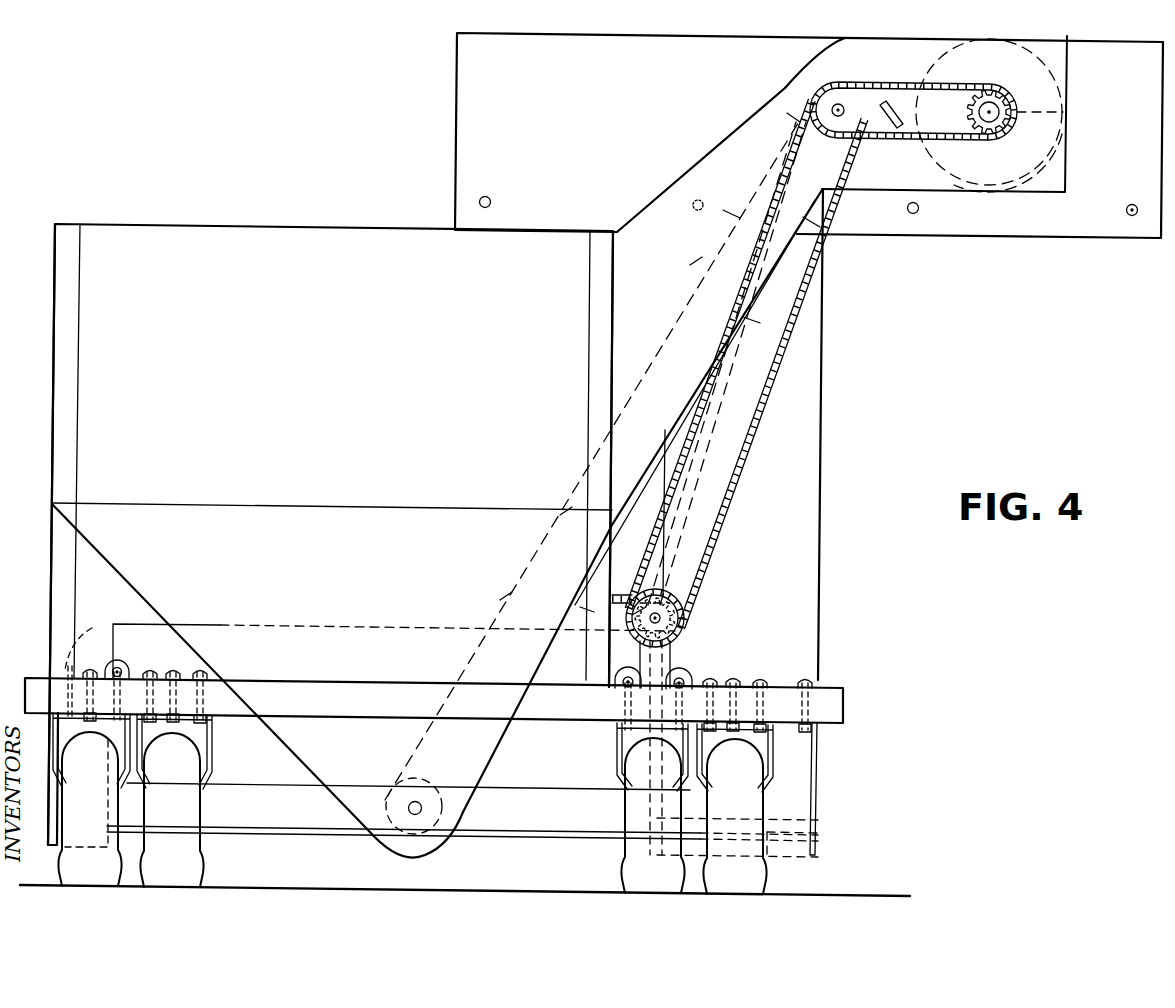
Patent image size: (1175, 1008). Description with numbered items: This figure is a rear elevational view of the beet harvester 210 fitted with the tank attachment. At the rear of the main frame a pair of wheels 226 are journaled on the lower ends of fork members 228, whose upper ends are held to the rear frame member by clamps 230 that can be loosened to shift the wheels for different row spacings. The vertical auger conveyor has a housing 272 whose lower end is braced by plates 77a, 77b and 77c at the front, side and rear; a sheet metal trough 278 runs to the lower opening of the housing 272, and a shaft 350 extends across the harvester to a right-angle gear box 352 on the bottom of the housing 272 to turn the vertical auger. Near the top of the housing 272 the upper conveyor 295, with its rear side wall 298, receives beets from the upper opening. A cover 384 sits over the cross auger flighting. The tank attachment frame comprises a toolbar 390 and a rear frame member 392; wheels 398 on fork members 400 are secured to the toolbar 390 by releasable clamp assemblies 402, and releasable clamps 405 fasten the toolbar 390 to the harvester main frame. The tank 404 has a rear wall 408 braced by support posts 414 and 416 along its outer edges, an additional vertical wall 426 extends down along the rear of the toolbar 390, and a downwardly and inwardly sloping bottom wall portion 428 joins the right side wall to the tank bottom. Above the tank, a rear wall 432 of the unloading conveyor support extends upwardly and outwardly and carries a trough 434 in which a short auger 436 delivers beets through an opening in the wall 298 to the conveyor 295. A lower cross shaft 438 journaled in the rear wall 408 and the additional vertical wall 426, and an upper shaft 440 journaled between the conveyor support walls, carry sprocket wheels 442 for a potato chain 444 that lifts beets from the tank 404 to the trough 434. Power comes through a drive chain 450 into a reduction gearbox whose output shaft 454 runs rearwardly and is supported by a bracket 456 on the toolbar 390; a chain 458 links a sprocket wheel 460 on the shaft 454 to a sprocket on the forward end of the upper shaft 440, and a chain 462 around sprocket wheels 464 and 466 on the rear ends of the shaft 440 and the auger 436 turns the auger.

The beet harvester 210 is at (907, 472).
The wheels 226 is at (195, 860).
The fork members 228 is at (213, 750).
The clamps 230 is at (182, 670).
The vertical housing 272 is at (823, 445).
The sheet metal trough 278 is at (538, 777).
The upper conveyor 295 is at (419, 108).
The side wall 298 is at (452, 154).
The shaft 350 is at (543, 836).
The right-angle gear box 352 is at (818, 834).
The cover 384 is at (128, 628).
The toolbar 390 is at (835, 706).
The rear frame member 392 is at (360, 690).
The wheels 398 is at (100, 875).
The fork members 400 is at (118, 752).
The releasable clamp assemblies 402 is at (117, 667).
The tank 404 is at (201, 199).
The releasable clamps 405 is at (198, 748).
The rear wall 408 is at (334, 274).
The support post 414 is at (72, 360).
The support post 416 is at (597, 331).
The additional vertical wall 426 is at (298, 760).
The sloping bottom wall portion 428 is at (528, 683).
The rear wall 432 is at (657, 190).
The trough 434 is at (934, 162).
The short auger 436 is at (934, 72).
The lower cross shaft 438 is at (414, 802).
The upper shaft 440 is at (822, 90).
The sprocket wheels 442 is at (424, 785).
The potato chain 444 is at (538, 560).
The drive chain 450 is at (617, 592).
The output shaft 454 is at (676, 600).
The bracket 456 is at (672, 645).
The chain 458 is at (736, 492).
The sprocket wheel 460 is at (668, 612).
The chain 462 is at (948, 137).
The sprocket wheel 464 is at (838, 104).
The sprocket wheel 466 is at (990, 100).
The plate 77a is at (800, 771).
The plate 77b is at (818, 790).
The plate 77c is at (806, 812).